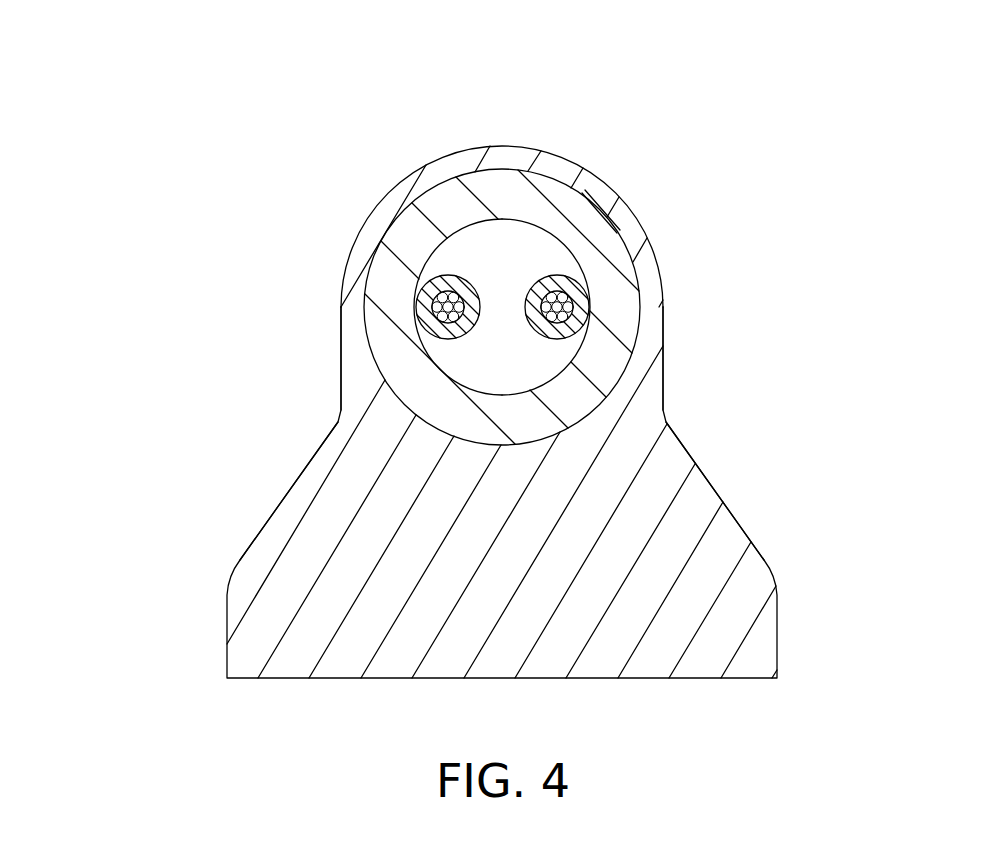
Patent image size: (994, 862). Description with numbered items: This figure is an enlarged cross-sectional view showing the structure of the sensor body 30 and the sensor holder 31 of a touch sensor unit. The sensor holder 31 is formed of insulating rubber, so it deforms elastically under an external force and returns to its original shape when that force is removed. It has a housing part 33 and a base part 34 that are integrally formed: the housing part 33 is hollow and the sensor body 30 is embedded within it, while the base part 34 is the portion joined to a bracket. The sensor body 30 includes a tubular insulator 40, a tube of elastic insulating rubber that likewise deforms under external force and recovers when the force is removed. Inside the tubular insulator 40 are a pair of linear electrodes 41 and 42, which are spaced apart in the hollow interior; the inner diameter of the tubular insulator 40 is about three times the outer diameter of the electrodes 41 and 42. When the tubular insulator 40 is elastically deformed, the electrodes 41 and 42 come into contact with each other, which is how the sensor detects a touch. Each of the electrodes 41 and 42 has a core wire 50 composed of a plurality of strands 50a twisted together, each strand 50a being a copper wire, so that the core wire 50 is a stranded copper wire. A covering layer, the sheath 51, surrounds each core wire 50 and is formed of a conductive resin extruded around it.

The sensor body 30 is at (592, 191).
The sensor holder 31 is at (117, 363).
The housing part 33 is at (340, 286).
The base part 34 is at (272, 517).
The tubular insulator 40 is at (640, 228).
The electrode 41 is at (465, 264).
The electrode 42 is at (541, 262).
The core wire 50 is at (606, 346).
The strand 50a is at (592, 308).
The sheath 51 is at (580, 334).